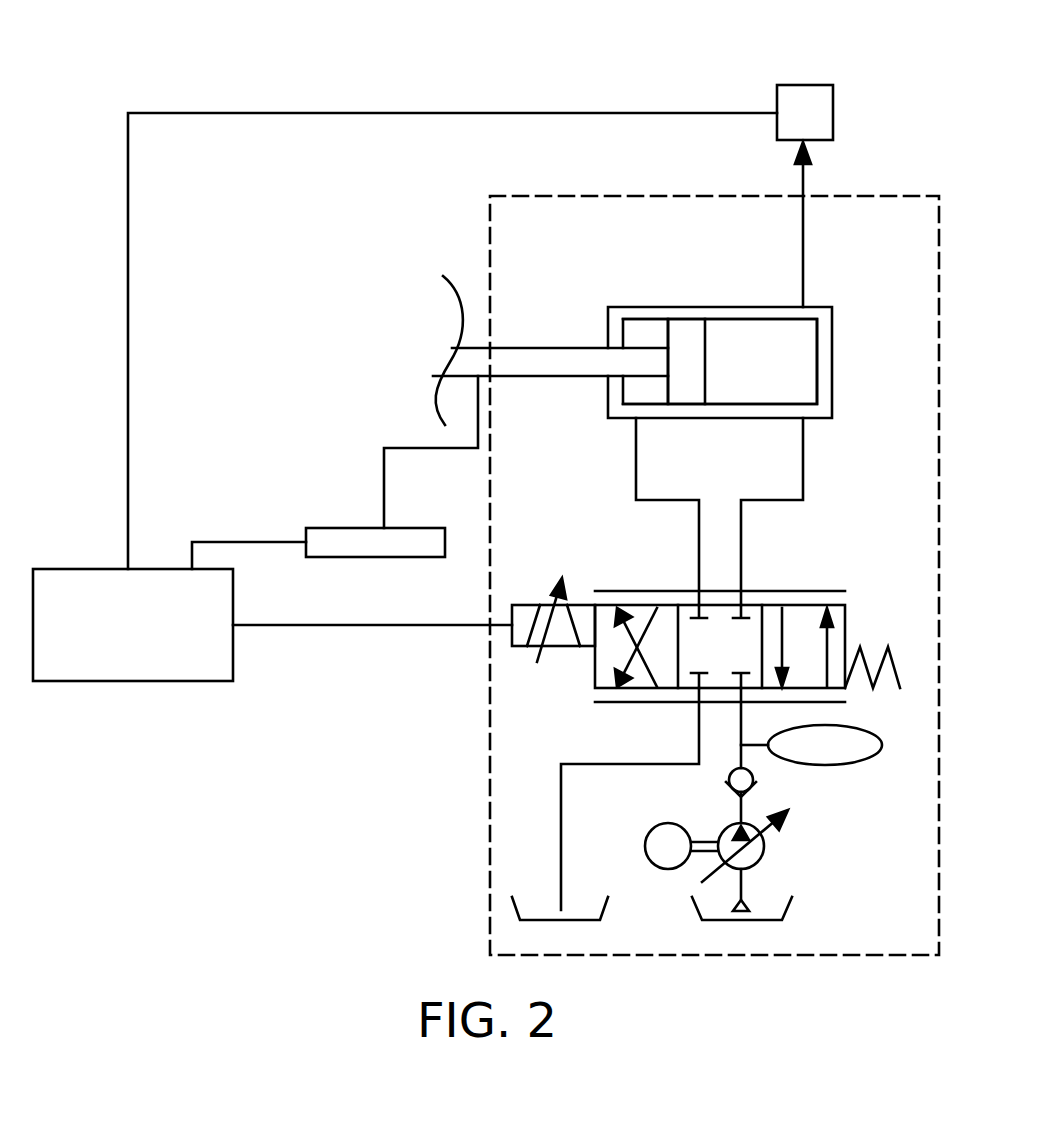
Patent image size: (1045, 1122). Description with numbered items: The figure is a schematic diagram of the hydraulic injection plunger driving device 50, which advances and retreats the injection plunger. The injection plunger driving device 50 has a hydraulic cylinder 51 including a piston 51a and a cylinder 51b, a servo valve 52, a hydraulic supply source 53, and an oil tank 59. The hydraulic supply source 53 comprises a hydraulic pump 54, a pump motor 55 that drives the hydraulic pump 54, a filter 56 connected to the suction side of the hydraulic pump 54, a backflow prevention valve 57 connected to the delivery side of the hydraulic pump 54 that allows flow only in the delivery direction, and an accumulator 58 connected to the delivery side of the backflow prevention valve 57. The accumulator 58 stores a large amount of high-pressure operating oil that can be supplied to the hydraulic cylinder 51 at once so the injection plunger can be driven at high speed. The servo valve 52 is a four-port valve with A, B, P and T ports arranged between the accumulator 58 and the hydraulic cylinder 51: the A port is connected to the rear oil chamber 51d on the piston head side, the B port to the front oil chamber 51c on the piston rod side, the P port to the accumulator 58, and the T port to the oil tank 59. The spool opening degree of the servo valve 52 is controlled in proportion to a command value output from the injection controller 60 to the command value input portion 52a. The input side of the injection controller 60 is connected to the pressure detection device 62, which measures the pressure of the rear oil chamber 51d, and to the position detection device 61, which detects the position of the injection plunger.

The injection plunger driving device 50 is at (877, 197).
The hydraulic cylinder 51 is at (632, 349).
The piston 51a is at (697, 382).
The cylinder 51b is at (608, 307).
The front oil chamber 51c is at (655, 328).
The rear oil chamber 51d is at (736, 330).
The servo valve 52 is at (845, 591).
The command value input portion 52a is at (562, 650).
The hydraulic supply source 53 is at (753, 852).
The hydraulic pump 54 is at (767, 845).
The pump motor 55 is at (645, 846).
The filter 56 is at (748, 900).
The backflow prevention valve 57 is at (753, 785).
The accumulator 58 is at (852, 762).
The oil tank 59 is at (608, 913).
The injection controller 60 is at (115, 683).
The position detection device 61 is at (322, 527).
The pressure detection device 62 is at (793, 82).